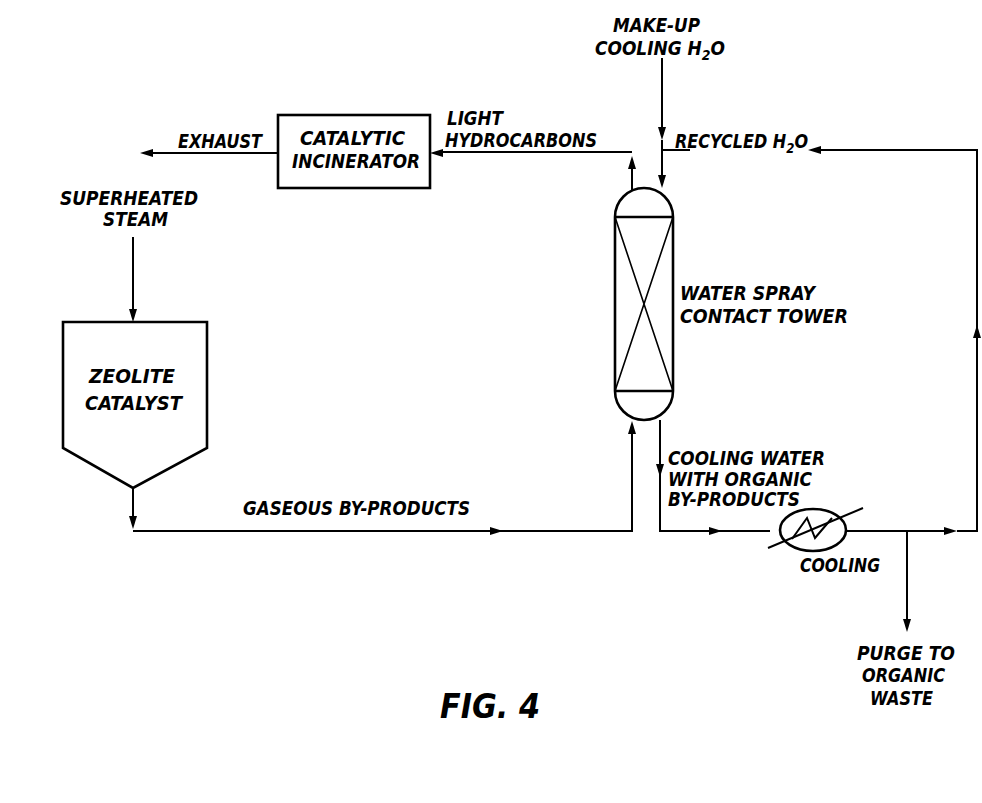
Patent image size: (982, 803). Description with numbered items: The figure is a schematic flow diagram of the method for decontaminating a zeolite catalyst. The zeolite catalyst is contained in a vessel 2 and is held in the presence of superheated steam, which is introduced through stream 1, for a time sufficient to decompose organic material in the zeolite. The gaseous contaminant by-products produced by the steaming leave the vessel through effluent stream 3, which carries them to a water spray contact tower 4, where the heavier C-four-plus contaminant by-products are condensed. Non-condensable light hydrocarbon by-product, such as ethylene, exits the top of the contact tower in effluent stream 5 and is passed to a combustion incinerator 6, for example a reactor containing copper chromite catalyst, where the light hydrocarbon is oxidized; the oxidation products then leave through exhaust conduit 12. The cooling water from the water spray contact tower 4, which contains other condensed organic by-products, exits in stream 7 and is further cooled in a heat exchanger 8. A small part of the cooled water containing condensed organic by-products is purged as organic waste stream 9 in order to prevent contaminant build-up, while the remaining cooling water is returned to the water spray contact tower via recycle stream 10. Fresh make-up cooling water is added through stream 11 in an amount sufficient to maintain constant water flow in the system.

The stream 1 is at (133, 275).
The vessel 2 is at (70, 395).
The effluent stream 3 is at (353, 494).
The water spray contact tower 4 is at (622, 305).
The effluent stream 5 is at (612, 150).
The combustion incinerator 6 is at (358, 121).
The stream 7 is at (662, 434).
The heat exchanger 8 is at (796, 551).
The organic waste stream 9 is at (907, 585).
The recycle stream 10 is at (728, 152).
The stream 11 is at (662, 85).
The exhaust conduit 12 is at (252, 157).